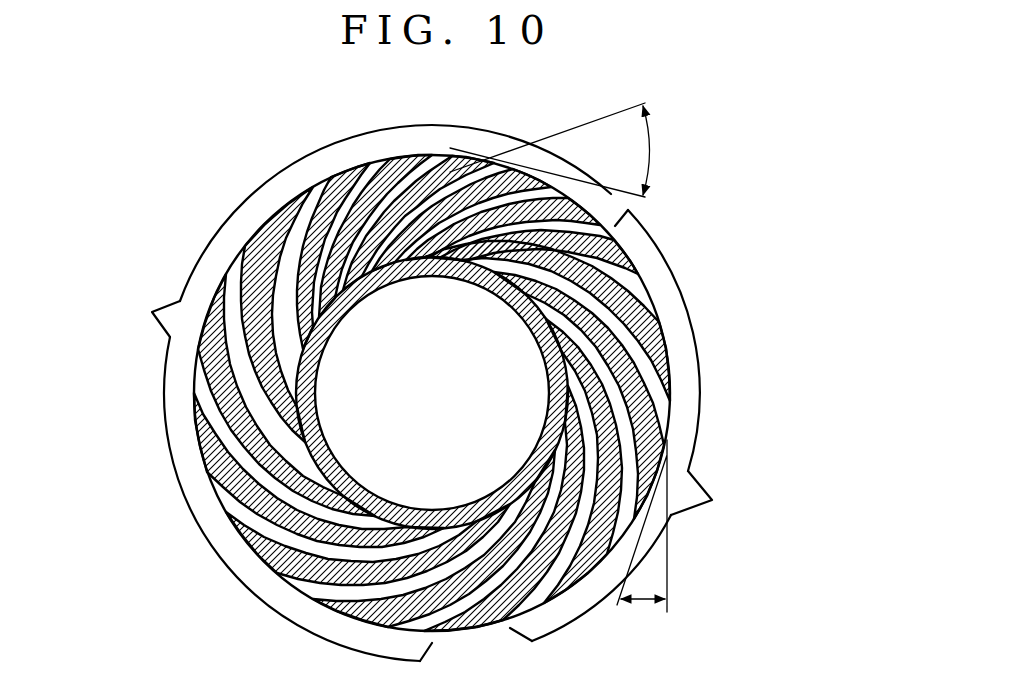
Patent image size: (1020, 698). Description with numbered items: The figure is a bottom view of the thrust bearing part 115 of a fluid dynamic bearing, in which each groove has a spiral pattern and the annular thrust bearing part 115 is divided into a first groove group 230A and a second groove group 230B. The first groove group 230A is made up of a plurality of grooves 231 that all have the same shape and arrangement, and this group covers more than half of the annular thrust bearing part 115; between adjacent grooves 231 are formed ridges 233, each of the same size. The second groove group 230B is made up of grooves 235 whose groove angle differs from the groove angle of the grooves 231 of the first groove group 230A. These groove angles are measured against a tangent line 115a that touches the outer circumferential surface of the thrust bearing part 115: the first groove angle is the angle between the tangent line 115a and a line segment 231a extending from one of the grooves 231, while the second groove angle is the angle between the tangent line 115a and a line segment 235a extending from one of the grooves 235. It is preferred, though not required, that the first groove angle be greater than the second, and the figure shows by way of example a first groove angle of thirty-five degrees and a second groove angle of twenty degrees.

The thrust bearing part 115 is at (722, 218).
The tangent line 115a is at (638, 209).
The first groove group 230A is at (134, 313).
The second groove group 230B is at (712, 502).
The grooves 231 is at (217, 403).
The line segment 231a is at (596, 121).
The ridges 233 is at (223, 478).
The grooves 235 is at (648, 397).
The line segment 235a is at (653, 596).